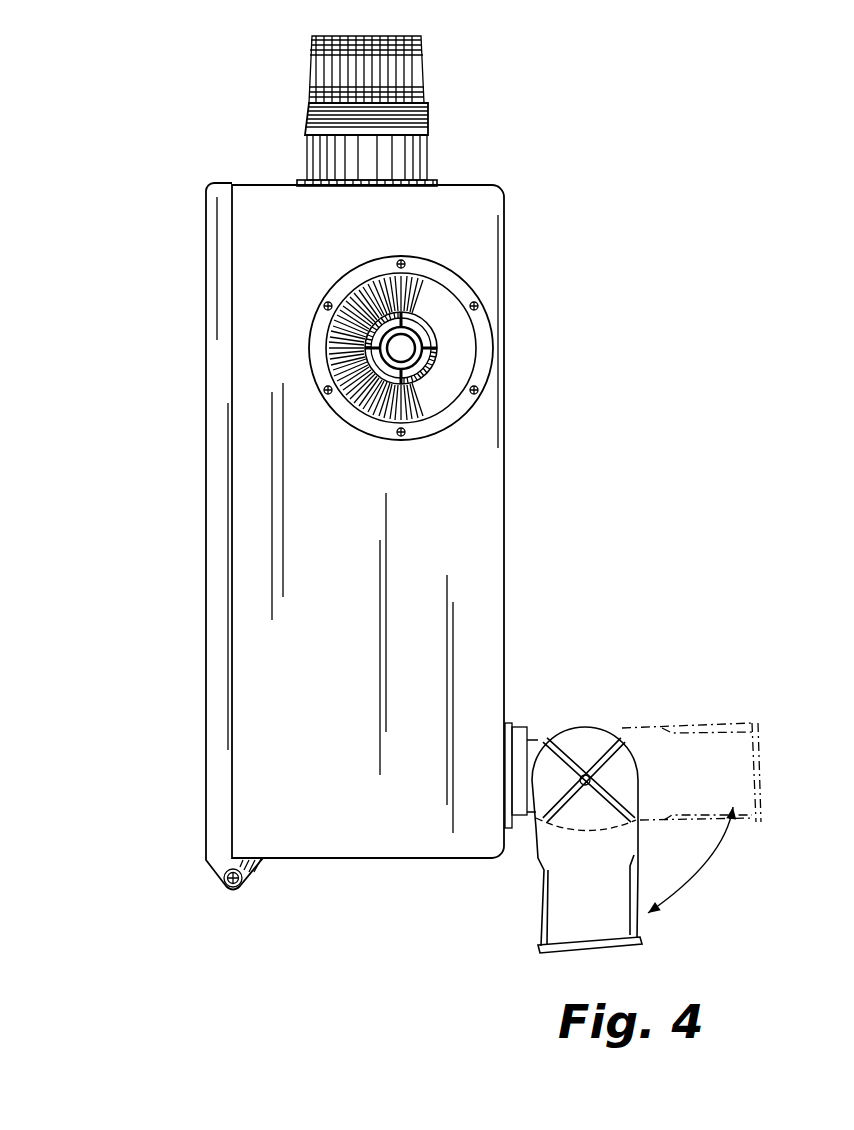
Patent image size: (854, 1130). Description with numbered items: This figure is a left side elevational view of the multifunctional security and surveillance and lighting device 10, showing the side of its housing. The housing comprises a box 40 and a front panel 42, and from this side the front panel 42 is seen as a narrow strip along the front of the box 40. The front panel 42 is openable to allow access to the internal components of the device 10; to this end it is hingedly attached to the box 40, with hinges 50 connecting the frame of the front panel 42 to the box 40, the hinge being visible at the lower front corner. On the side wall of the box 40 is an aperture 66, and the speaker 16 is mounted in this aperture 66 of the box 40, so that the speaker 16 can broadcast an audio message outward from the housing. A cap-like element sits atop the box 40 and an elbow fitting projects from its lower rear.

The multifunctional security and surveillance and lighting device 10 is at (66, 157).
The speaker 16 is at (420, 318).
The box of housing 40 is at (505, 598).
The front panel of housing 42 is at (208, 182).
The hinges 50 is at (253, 868).
The aperture of box 66 is at (485, 308).